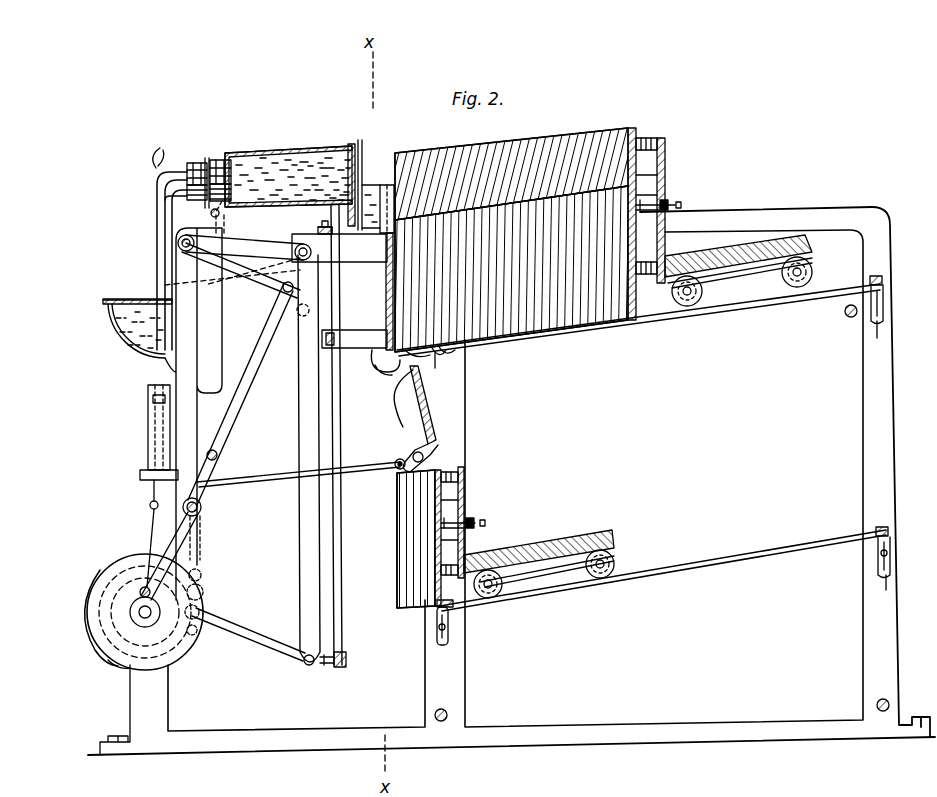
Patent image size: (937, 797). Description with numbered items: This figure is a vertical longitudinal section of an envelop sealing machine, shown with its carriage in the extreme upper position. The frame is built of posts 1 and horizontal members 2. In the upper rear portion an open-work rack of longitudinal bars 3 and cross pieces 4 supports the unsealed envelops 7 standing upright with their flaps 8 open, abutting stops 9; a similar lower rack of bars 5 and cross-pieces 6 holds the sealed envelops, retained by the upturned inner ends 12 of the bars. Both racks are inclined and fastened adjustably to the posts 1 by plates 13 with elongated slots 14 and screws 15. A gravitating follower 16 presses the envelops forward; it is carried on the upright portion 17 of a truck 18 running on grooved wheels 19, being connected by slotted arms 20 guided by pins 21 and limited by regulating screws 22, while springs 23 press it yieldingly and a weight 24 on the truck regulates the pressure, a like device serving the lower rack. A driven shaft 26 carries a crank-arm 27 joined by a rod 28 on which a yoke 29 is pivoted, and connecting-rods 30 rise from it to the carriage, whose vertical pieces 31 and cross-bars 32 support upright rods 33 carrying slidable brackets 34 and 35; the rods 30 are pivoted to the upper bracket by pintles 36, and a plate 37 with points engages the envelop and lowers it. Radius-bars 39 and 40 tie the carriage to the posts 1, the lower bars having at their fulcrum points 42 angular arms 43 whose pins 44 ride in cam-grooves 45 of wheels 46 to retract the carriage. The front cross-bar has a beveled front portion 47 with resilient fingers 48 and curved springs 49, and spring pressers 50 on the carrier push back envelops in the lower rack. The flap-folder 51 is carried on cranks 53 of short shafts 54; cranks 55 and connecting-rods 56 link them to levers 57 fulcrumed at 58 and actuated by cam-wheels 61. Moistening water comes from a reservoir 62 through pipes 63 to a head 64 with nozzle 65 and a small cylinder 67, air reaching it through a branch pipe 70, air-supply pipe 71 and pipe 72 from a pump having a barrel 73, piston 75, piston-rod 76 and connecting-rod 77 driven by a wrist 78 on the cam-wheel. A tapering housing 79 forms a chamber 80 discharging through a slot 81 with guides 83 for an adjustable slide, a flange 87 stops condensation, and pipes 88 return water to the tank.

The posts 1 is at (130, 720).
The horizontal members 2 is at (820, 212).
The longitudinal bars 3 is at (718, 300).
The cross pieces 4 is at (884, 282).
The bars 5 is at (738, 555).
The cross-pieces 6 is at (876, 534).
The unsealed envelops 7 is at (386, 312).
The flaps 8 is at (415, 153).
The stops 9 is at (389, 185).
The inner ends of bars 12 is at (398, 594).
The plates 13 is at (885, 318).
The elongated slots 14 is at (872, 318).
The screws 15 is at (885, 300).
The gravitating follower 16 is at (650, 178).
The upright portion of truck 17 is at (667, 150).
The truck 18 is at (735, 275).
The grooved wheels 19 is at (796, 289).
The slotted arms 20 is at (662, 203).
The pins 21 is at (662, 210).
The regulating screws 22 is at (682, 205).
The springs 23 is at (645, 140).
The weight 24 is at (745, 252).
The driven shaft 26 is at (139, 616).
The crank-arms 27 is at (190, 548).
The rod 28 is at (202, 507).
The yoke 29 is at (217, 458).
The connecting-rods 30 is at (246, 383).
The vertical pieces 31 is at (299, 604).
The cross-bars 32 is at (333, 245).
The upright rods 33 is at (321, 642).
The upper slidable bracket 34 is at (339, 241).
The lower slidable bracket 35 is at (354, 339).
The pintles 36 is at (290, 250).
The plate 37 is at (386, 294).
The radius-bars 39 is at (215, 262).
The radius-bars 40 is at (268, 652).
The fulcrum points 42 is at (204, 592).
The angular arms 43 is at (200, 618).
The pins 44 is at (194, 636).
The cam-grooves 45 is at (110, 590).
The wheels 46 is at (122, 664).
The beveled front portion 47 is at (440, 356).
The resilient fingers 48 is at (452, 365).
The springs 49 is at (412, 392).
The spring pressers 50 is at (382, 376).
The flap-folder 51 is at (428, 412).
The cranks 53 is at (438, 447).
The short shafts 54 is at (412, 454).
The cranks 55 is at (398, 470).
The connecting-rods 56 is at (272, 482).
The levers 57 is at (200, 532).
The fulcrum 58 is at (202, 576).
The cam-wheels 61 is at (90, 642).
The water reservoir 62 is at (112, 328).
The pipes 63 is at (160, 174).
The head 64 is at (190, 163).
The nozzle 65 is at (225, 184).
The small cylinder 67 is at (215, 160).
The branch pipe 70 is at (210, 211).
The air-supply pipe 71 is at (172, 204).
The pipe 72 is at (220, 345).
The barrel 73 is at (148, 400).
The piston 75 is at (153, 420).
The piston-rod 76 is at (150, 492).
The connecting-rod 77 is at (150, 530).
The wrist 78 is at (140, 592).
The housing 79 is at (265, 150).
The chamber 80 is at (300, 165).
The slot 81 is at (360, 140).
The guides 83 is at (367, 185).
The flange 87 is at (352, 146).
The pipes 88 is at (165, 284).